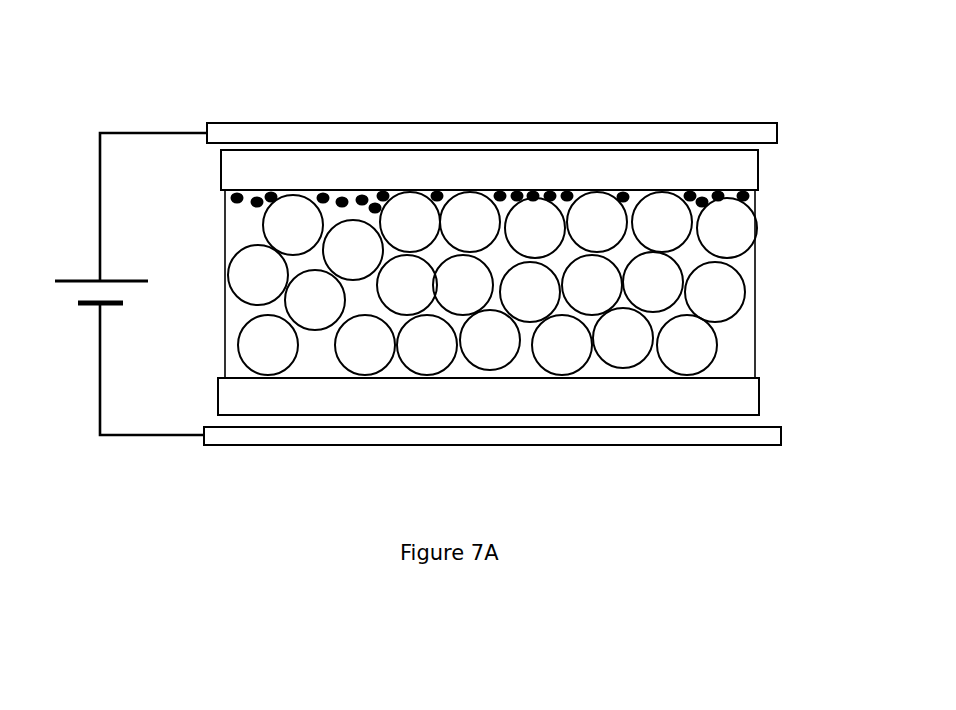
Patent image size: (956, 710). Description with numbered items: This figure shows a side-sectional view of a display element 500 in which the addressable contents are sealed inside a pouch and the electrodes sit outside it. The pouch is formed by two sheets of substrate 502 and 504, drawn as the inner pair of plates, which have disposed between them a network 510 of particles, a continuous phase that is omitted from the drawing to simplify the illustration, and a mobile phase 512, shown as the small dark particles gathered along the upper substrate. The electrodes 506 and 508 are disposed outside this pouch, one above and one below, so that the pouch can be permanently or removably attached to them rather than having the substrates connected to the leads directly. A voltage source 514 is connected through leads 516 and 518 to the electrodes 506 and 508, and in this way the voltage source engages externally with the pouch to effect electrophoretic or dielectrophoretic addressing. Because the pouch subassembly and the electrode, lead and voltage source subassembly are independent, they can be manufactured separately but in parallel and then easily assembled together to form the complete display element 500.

The display element 500 is at (467, 460).
The substrate 502 is at (777, 134).
The substrate 504 is at (782, 434).
The electrode 506 is at (759, 173).
The electrode 508 is at (760, 393).
The network of particles 510 is at (718, 292).
The mobile phase 512 is at (748, 198).
The voltage source 514 is at (81, 279).
The lead 516 is at (155, 134).
The lead 518 is at (137, 433).